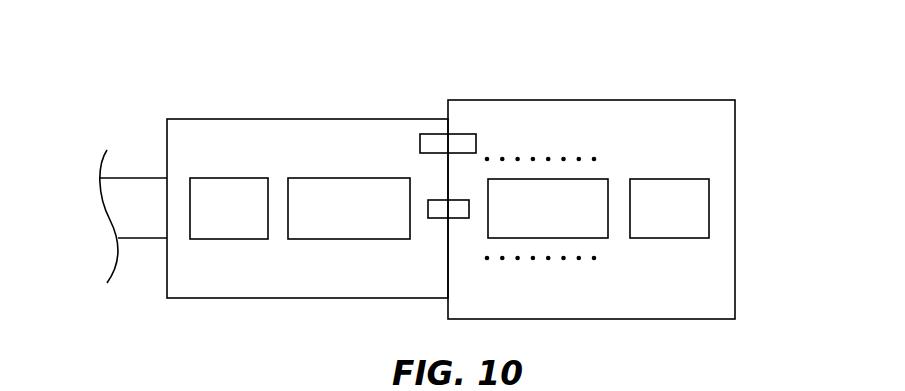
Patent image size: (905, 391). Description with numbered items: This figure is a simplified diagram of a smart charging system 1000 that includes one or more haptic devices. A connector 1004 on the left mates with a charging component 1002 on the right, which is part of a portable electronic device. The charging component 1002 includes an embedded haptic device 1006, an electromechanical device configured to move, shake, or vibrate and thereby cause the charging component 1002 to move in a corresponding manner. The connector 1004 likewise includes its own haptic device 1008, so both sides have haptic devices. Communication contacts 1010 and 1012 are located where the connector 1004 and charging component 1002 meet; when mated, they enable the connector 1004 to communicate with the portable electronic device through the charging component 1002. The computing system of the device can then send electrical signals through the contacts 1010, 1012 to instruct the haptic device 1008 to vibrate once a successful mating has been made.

The smart charging system 1000 is at (318, 44).
The charging component 1002 is at (710, 86).
The connector 1004 is at (183, 104).
The haptic device 1006 is at (648, 218).
The haptic device 1008 is at (208, 218).
The communication contact 1010 is at (430, 133).
The communication contact 1012 is at (327, 230).